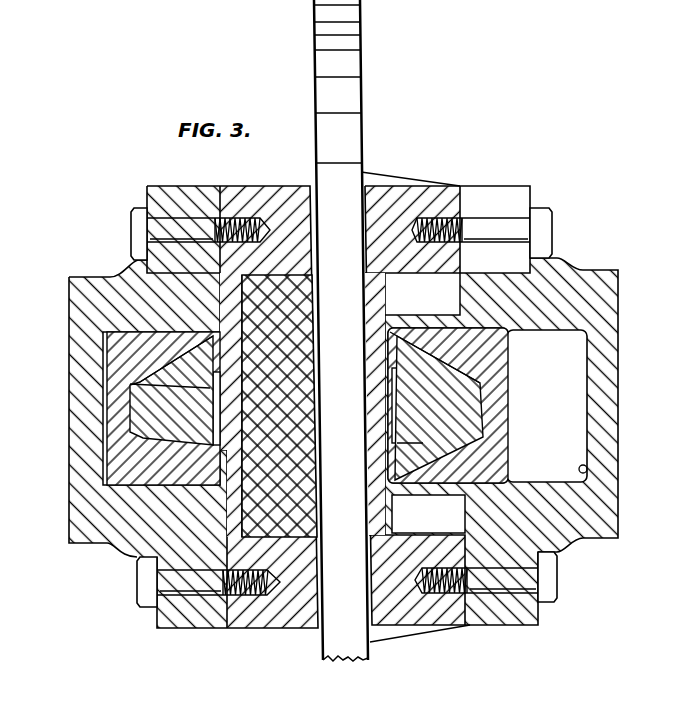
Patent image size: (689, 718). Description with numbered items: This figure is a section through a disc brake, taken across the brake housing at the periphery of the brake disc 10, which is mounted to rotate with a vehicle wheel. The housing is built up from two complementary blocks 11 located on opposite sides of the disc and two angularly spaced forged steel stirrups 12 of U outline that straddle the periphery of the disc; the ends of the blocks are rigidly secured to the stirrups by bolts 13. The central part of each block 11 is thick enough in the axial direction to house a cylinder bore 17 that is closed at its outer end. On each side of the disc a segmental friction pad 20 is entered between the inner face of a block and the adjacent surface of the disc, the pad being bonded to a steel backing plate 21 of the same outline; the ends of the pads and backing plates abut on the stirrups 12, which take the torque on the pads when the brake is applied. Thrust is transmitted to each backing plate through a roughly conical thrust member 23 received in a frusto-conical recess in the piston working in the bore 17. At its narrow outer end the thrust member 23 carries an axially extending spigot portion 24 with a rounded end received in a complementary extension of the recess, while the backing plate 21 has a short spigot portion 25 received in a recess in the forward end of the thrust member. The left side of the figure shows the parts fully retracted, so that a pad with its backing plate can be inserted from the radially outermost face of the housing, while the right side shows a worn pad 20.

The brake disc 10 is at (328, 71).
The complementary block 11 is at (75, 458).
The forged steel stirrup 12 is at (268, 188).
The bolt 13 is at (132, 232).
The cylinder bore 17 is at (578, 416).
The friction pad 20 is at (300, 272).
The steel backing plate 21 is at (223, 292).
The thrust member 23 is at (217, 393).
The spigot portion 24 is at (130, 420).
The spigot portion 25 is at (140, 382).